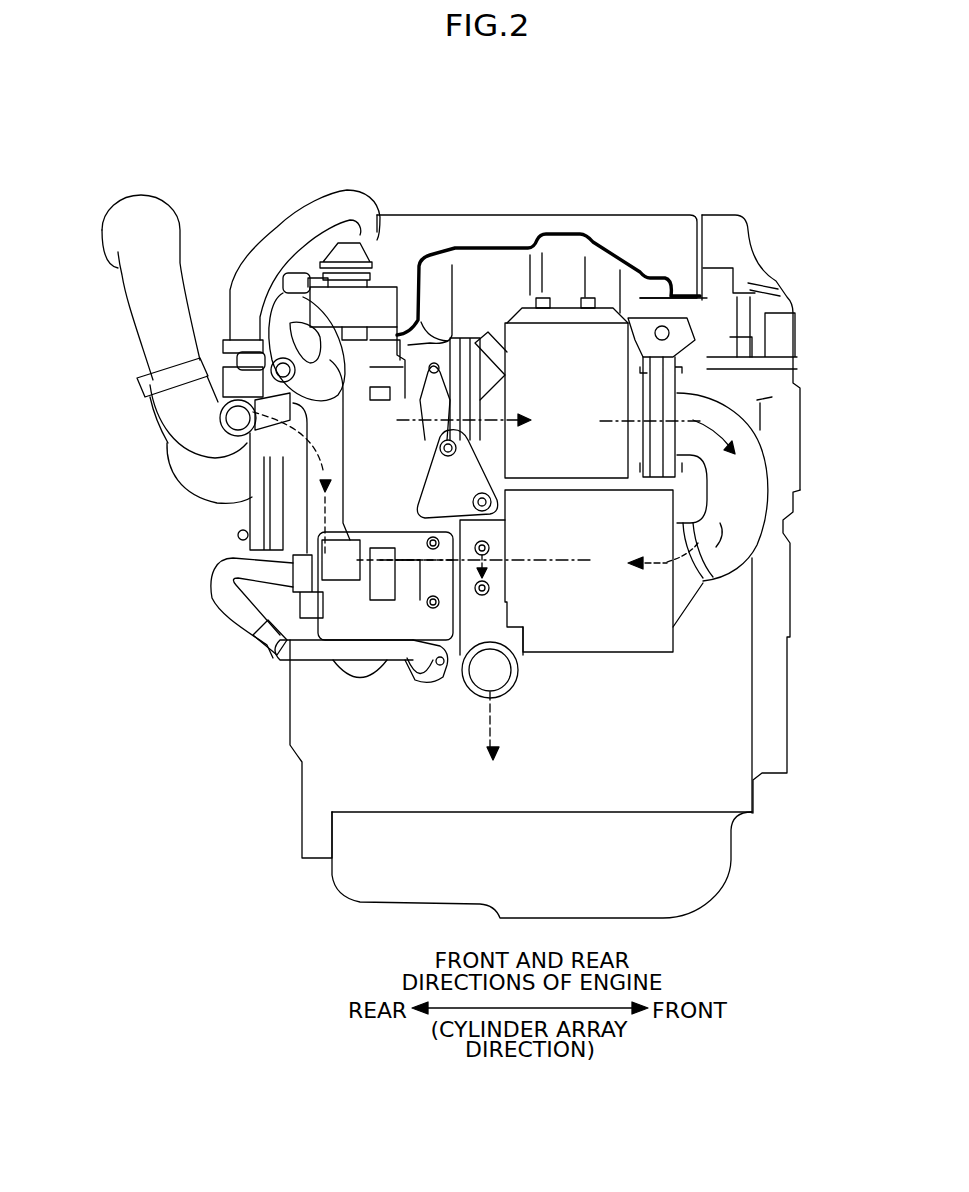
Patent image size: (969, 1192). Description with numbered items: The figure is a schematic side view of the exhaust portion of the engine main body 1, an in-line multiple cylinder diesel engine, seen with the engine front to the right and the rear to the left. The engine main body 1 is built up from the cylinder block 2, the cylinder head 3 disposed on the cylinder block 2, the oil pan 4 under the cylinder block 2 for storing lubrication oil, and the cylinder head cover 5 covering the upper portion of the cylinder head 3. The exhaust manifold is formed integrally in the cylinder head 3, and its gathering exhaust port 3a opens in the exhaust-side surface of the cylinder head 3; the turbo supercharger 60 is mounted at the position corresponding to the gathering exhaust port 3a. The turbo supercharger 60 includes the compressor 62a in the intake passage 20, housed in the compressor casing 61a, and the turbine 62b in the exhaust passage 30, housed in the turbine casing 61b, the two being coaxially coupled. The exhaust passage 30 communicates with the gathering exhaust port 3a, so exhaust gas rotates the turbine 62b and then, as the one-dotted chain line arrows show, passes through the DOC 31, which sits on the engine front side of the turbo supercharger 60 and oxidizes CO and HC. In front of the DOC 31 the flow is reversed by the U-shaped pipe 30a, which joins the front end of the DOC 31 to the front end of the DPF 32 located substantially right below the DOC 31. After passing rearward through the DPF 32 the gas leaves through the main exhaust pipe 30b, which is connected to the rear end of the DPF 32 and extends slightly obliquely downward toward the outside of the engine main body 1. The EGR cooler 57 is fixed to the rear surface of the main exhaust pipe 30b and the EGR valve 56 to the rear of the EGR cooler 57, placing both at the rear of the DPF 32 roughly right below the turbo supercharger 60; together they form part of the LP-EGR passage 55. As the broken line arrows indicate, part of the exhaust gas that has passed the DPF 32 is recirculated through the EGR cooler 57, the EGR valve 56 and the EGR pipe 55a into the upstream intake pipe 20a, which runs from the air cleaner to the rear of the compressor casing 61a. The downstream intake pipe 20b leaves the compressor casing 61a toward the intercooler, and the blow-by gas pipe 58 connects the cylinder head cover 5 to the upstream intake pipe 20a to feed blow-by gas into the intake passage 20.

The engine main body 1 is at (786, 208).
The cylinder block 2 is at (745, 650).
The cylinder head 3 is at (757, 398).
The gathering exhaust port 3a is at (502, 499).
The oil pan 4 is at (718, 870).
The cylinder head cover 5 is at (684, 225).
The intake passage 20 is at (175, 372).
The upstream intake pipe 20a is at (150, 390).
The downstream intake pipe 20b is at (170, 460).
The exhaust passage 30 is at (653, 625).
The U-shaped pipe 30a is at (757, 490).
The main exhaust pipe 30b is at (497, 688).
The DOC (Diesel Oxidation Catalyst) 31 is at (588, 337).
The DPF (Diesel Particulate Filter) 32 is at (615, 628).
The LP-EGR passage 55 is at (228, 476).
The EGR pipe 55a is at (307, 483).
The EGR valve 56 is at (328, 655).
The EGR cooler 57 is at (400, 662).
The blow-by gas pipe 58 is at (262, 262).
The turbo supercharger 60 is at (520, 112).
The compressor casing 61a is at (337, 553).
The turbine casing 61b is at (402, 398).
The compressor 62a is at (356, 216).
The turbine 62b is at (416, 270).